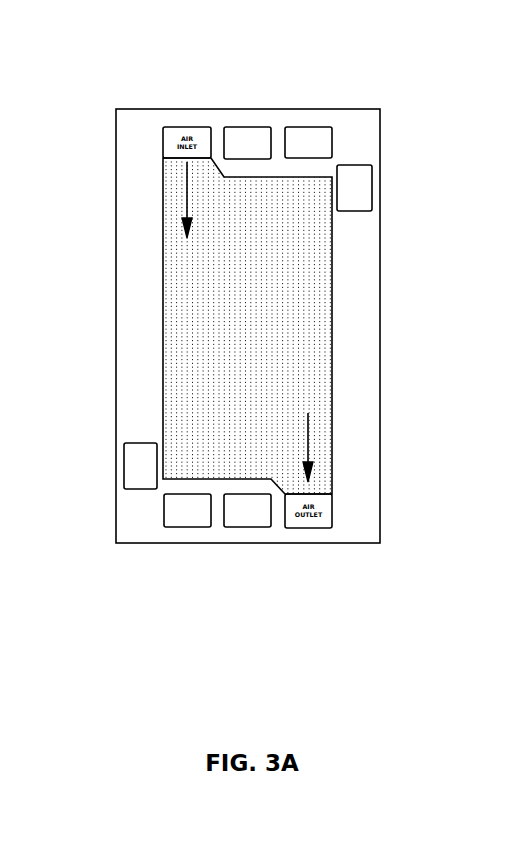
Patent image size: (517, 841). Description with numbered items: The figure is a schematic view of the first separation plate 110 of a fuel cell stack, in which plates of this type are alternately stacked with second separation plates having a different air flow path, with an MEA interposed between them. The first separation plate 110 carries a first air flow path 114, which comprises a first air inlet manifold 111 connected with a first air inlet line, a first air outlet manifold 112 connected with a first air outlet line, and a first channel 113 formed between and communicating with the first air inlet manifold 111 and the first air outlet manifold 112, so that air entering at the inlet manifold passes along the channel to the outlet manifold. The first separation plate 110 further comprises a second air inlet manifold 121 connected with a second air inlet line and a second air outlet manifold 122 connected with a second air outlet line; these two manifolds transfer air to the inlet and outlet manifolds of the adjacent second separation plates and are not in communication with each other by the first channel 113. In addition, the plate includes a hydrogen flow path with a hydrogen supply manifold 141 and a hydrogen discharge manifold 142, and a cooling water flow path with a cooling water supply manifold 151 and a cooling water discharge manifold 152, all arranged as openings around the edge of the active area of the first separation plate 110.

The first separation plate 110 is at (324, 565).
The first air inlet manifold 111 is at (200, 157).
The first air outlet manifold 112 is at (332, 503).
The first channel 113 is at (318, 328).
The first air flow path 114 is at (440, 235).
The second air inlet manifold 121 is at (372, 185).
The second air outlet manifold 122 is at (124, 462).
The hydrogen supply manifold 141 is at (176, 527).
The hydrogen discharge manifold 142 is at (307, 127).
The cooling water supply manifold 151 is at (243, 127).
The cooling water discharge manifold 152 is at (239, 527).